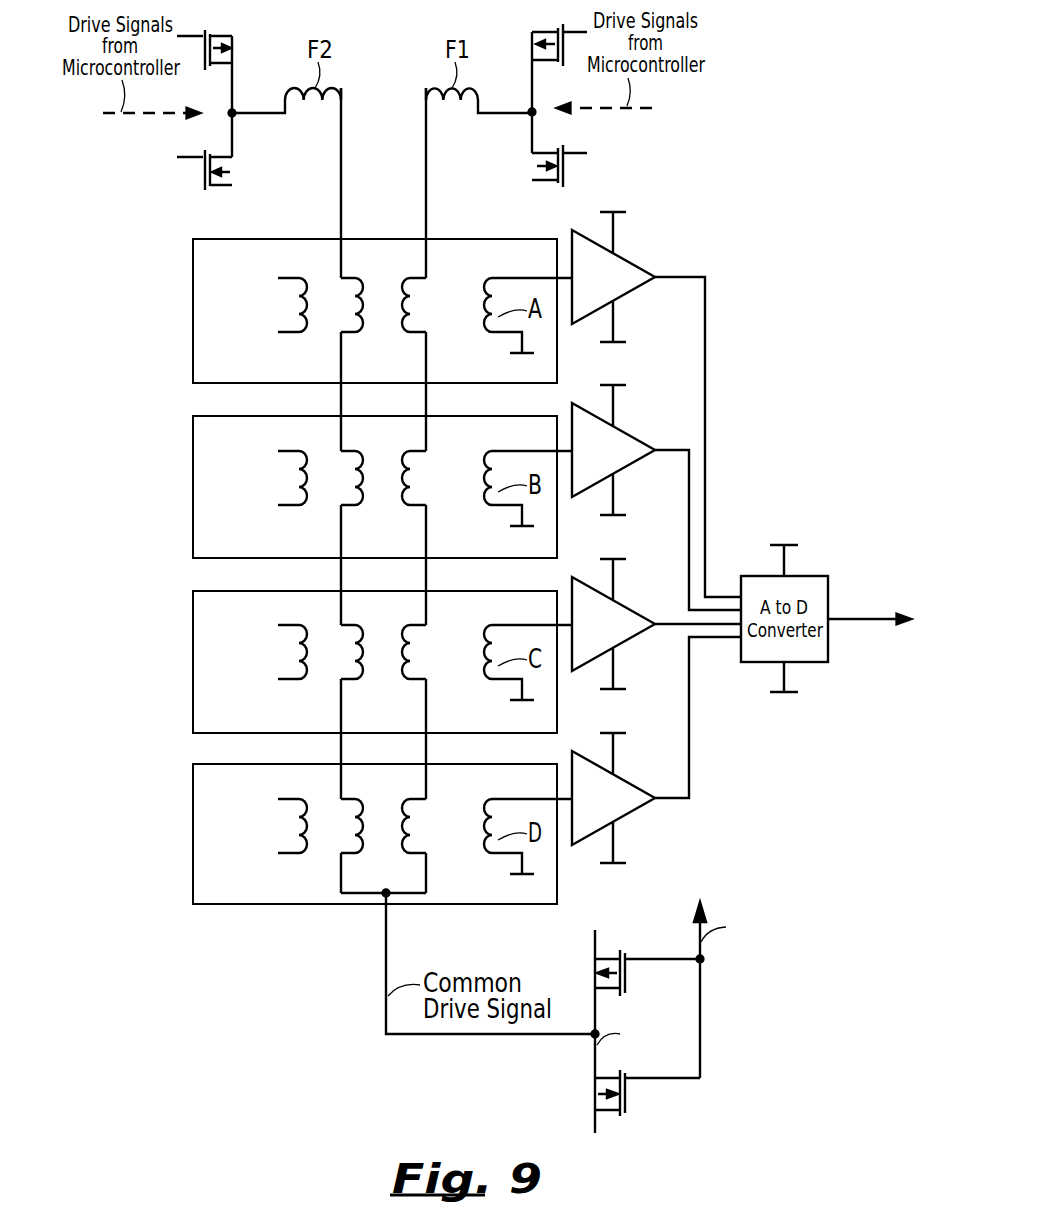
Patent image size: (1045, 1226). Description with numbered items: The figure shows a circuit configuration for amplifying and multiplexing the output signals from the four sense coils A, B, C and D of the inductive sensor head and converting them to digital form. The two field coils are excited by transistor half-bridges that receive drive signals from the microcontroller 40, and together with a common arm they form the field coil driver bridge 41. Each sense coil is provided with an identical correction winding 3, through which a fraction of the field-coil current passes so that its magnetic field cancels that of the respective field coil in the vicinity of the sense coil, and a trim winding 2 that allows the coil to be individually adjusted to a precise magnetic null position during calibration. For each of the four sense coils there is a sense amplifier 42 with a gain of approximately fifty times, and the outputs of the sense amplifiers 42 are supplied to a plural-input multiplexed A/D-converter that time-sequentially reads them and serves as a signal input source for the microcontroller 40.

The trim winding 2 is at (292, 307).
The correction winding 3 is at (353, 307).
The microcontroller 40 is at (864, 622).
The field coil driver bridge 41 is at (575, 1074).
The sense amplifier 42 is at (637, 264).